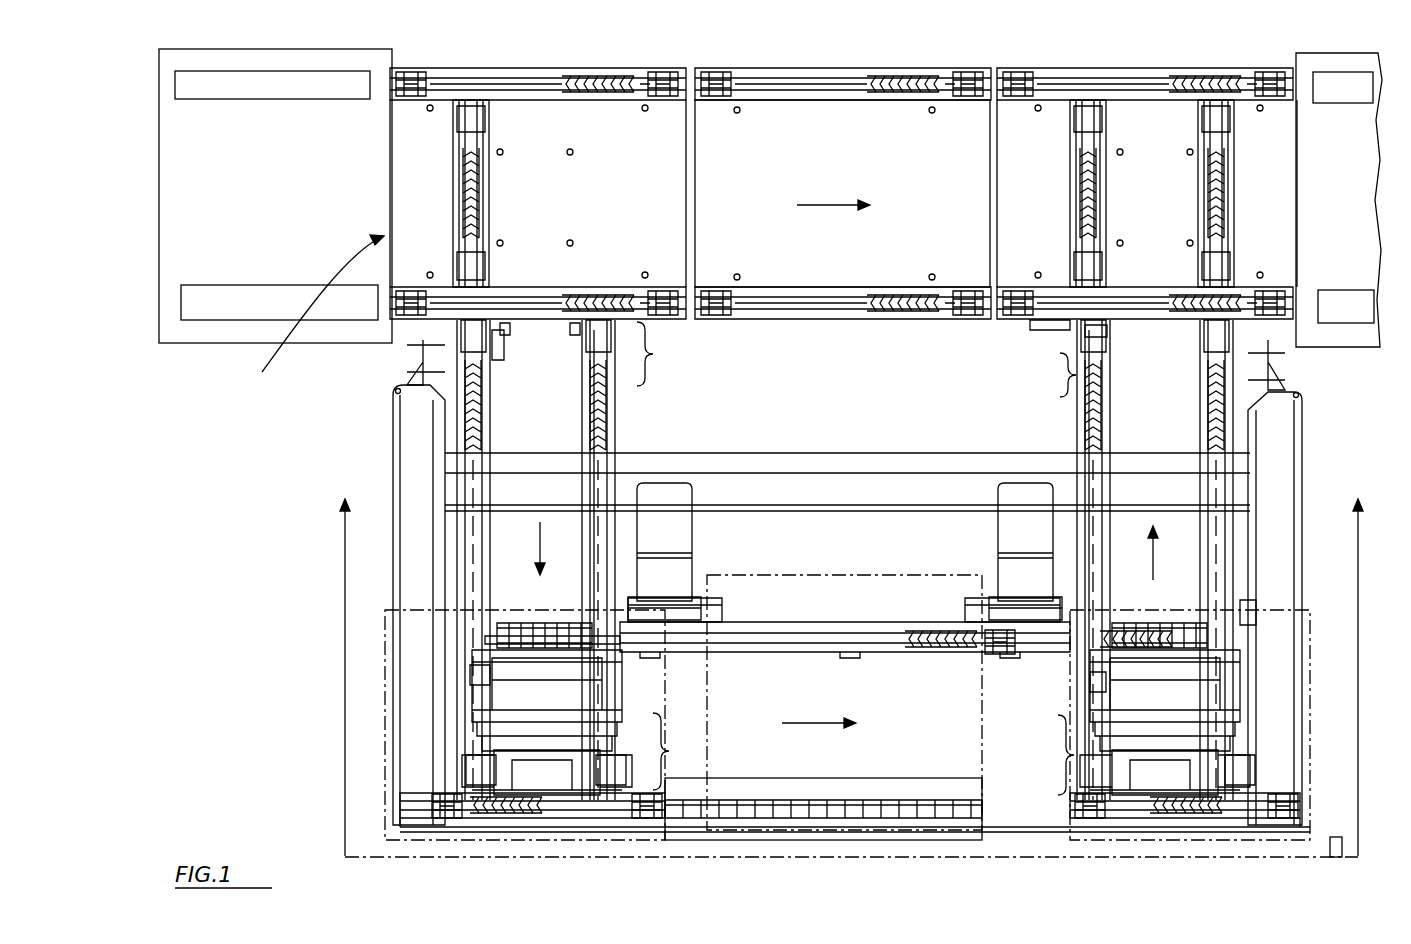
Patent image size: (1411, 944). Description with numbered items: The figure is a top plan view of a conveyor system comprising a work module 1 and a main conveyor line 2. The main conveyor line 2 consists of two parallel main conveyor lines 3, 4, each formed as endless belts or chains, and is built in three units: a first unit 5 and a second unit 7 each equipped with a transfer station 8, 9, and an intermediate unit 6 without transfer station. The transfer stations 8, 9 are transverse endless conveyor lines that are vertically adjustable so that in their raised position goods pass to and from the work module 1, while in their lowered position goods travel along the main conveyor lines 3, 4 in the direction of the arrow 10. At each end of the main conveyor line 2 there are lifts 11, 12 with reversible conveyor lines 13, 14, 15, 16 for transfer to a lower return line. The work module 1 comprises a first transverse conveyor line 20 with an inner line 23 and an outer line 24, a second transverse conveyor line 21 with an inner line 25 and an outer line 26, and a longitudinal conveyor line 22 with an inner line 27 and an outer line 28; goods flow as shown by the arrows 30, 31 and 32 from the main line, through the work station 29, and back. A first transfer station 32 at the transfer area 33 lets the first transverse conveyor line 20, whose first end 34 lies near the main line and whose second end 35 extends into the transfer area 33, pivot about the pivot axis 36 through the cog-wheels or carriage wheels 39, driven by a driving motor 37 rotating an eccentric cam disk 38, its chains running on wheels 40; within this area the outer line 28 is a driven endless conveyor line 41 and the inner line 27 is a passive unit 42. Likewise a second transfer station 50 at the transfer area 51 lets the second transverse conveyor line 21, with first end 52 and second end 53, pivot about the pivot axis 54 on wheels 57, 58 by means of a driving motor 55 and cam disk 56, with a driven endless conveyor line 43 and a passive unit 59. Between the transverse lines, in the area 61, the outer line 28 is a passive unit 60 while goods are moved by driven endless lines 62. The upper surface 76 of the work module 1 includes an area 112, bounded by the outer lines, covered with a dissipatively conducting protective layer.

The work module 1 is at (333, 578).
The main conveyor line 2 is at (314, 313).
The main conveyor line 3 is at (393, 70).
The main conveyor line 4 is at (398, 287).
The first unit 5 is at (612, 68).
The intermediate unit 6 is at (913, 68).
The second unit 7 is at (1130, 68).
The transfer station 8 is at (472, 100).
The transfer station 9 is at (1230, 104).
The arrow 10 is at (818, 205).
The lift 11 is at (308, 170).
The lift 12 is at (1321, 170).
The conveyor line 13 is at (243, 98).
The conveyor line 14 is at (246, 315).
The conveyor line 15 is at (1329, 99).
The conveyor line 16 is at (1334, 318).
The first transverse conveyor line 20 is at (617, 426).
The second transverse conveyor line 21 is at (1078, 427).
The longitudinal conveyor line 22 is at (733, 840).
The inner line 23 is at (583, 417).
The outer line 24 is at (495, 402).
The inner line 25 is at (1112, 392).
The outer line 26 is at (1203, 413).
The inner line 27 is at (480, 622).
The outer line 28 is at (563, 815).
The work station 29 is at (897, 577).
The arrow 30 is at (541, 541).
The arrow 31 is at (808, 723).
The first transfer station 32 is at (1152, 562).
The transfer area 33 is at (530, 640).
The first end 34 is at (655, 348).
The second end 35 is at (675, 751).
The pivot axis 36 is at (506, 338).
The driving motor 37 is at (550, 694).
The cam disk 38 is at (478, 672).
The cog-wheels or carriage wheels 39 is at (596, 331).
The cog-wheel or carriage wheel 40 is at (486, 787).
The driven endless conveyor line 41 is at (512, 793).
The passive unit 42 is at (578, 620).
The driven endless conveyor line 43 is at (1183, 812).
The second transfer station 50 is at (1272, 700).
The transfer area 51 is at (1245, 617).
The first end 52 is at (1022, 360).
The second end 53 is at (1022, 747).
The pivot axis 54 is at (1112, 333).
The driving motor 55 is at (1167, 694).
The cam disk 56 is at (1098, 681).
The cog-wheels or carriage wheels 57 is at (1035, 325).
The cog-wheel or carriage wheel 58 is at (1238, 770).
The passive unit 59 is at (1177, 622).
The passive unit 60 is at (860, 802).
The area 61 is at (691, 775).
The driven endless lines 62 is at (783, 653).
The upper surface 76 is at (815, 552).
The area 112 is at (722, 540).